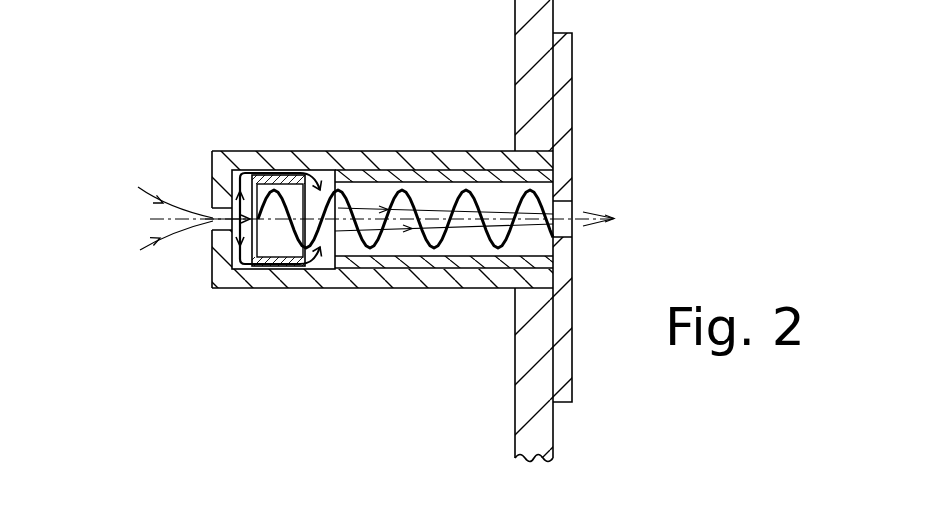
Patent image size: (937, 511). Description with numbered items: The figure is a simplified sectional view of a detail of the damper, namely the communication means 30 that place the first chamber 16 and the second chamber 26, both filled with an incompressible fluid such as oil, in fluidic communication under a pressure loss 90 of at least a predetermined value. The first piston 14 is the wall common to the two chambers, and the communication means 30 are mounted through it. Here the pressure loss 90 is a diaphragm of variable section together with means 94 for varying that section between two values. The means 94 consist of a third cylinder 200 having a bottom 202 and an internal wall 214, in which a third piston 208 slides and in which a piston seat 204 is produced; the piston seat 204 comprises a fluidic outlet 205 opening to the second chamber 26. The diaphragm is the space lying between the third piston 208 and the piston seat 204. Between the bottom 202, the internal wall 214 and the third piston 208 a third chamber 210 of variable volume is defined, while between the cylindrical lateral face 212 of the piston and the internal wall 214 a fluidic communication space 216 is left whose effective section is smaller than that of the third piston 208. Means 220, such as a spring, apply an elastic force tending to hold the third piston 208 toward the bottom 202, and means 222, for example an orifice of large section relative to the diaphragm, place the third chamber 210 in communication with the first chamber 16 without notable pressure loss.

The first piston 14 is at (552, 72).
The first chamber 16 is at (141, 218).
The second chamber 26 is at (629, 216).
The communication means 30 is at (404, 148).
The pressure loss 90 is at (323, 270).
The means for varying the section of the diaphragm 94 is at (257, 268).
The third cylinder 200 is at (477, 158).
The bottom of the third cylinder 202 is at (223, 180).
The piston seat 204 is at (348, 267).
The fluidic outlet 205 is at (574, 206).
The third piston 208 is at (283, 268).
The third chamber 210 is at (242, 270).
The cylindrical lateral face 212 is at (271, 175).
The internal wall of the third cylinder 214 is at (325, 172).
The fluidic communication space 216 is at (273, 182).
The means for applying an elastic force 220 is at (447, 262).
The means for placing the third chamber in fluidic communication with the first cham 222 is at (225, 226).